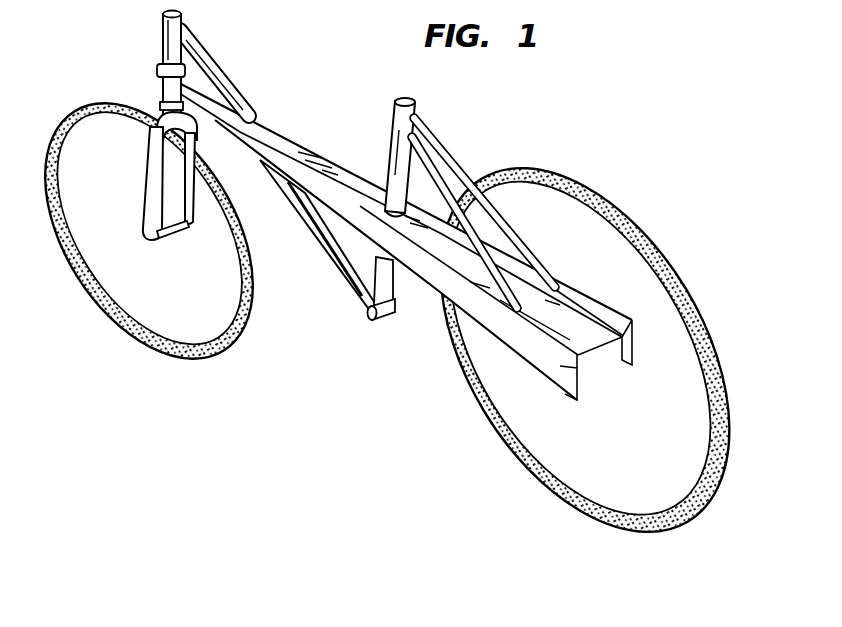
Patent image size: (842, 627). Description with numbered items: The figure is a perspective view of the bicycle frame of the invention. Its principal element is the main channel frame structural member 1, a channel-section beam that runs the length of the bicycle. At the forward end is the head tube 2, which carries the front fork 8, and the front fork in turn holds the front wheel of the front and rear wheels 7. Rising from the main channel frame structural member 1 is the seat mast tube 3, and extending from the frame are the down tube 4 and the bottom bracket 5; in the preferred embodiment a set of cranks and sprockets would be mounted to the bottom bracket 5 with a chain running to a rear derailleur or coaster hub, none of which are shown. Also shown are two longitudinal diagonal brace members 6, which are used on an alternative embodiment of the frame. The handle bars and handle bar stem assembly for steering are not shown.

The main channel frame structural member 1 is at (291, 130).
The head tube 2 is at (163, 53).
The seat mast tube 3 is at (387, 157).
The down tube 4 is at (211, 72).
The bottom bracket 5 is at (389, 308).
The longitudinal diagonal brace members 6 is at (436, 150).
The front and rear wheels 7 is at (253, 318).
The front fork 8 is at (152, 196).